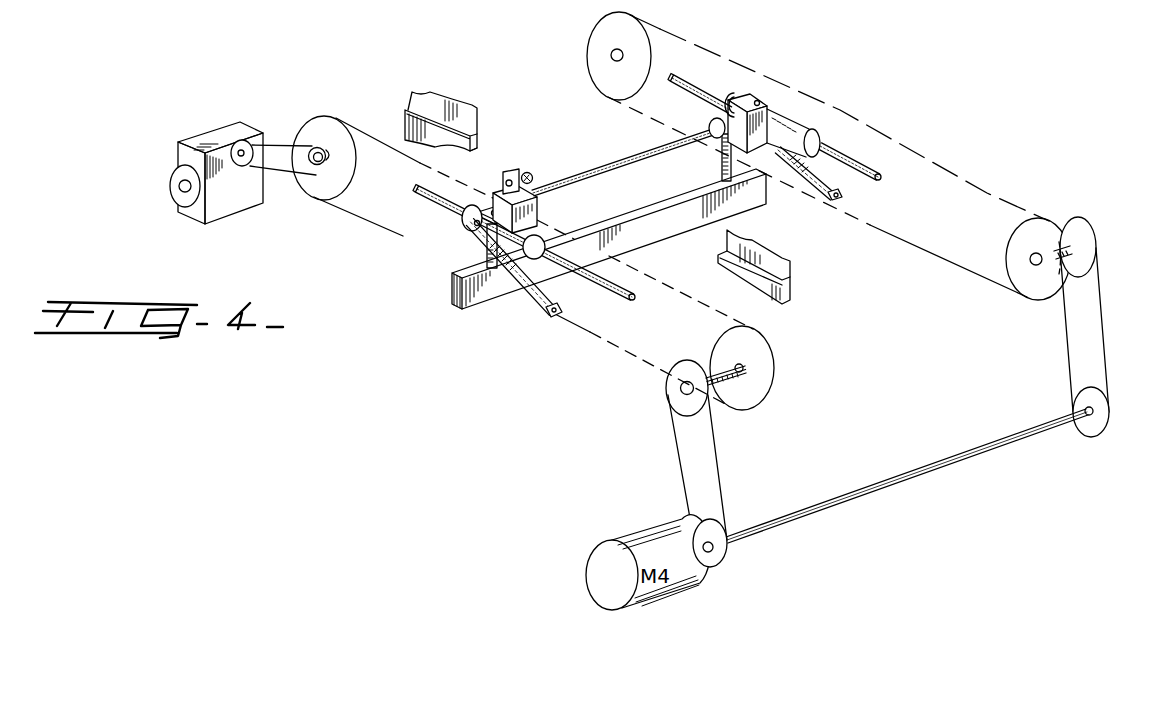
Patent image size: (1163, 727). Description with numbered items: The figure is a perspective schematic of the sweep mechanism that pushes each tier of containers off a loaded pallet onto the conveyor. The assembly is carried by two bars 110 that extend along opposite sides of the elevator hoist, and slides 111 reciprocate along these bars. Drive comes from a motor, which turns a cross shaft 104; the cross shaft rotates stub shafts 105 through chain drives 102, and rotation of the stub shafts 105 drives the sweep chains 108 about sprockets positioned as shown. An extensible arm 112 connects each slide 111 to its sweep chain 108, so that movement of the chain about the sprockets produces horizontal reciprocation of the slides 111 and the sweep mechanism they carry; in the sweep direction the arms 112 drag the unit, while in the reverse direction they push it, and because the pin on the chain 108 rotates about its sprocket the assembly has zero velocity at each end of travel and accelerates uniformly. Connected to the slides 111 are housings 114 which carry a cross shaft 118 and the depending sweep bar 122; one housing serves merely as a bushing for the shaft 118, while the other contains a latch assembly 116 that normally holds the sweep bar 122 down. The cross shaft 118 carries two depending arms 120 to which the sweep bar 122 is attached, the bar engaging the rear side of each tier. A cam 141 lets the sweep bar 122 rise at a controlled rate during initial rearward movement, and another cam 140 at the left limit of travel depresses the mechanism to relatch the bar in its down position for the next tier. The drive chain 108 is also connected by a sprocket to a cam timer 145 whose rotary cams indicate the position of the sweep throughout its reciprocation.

The chain drives 102 is at (1104, 338).
The cross shaft 104 is at (860, 497).
The stub shafts 105 is at (1076, 243).
The sweep chains 108 is at (613, 342).
The bars 110 is at (631, 298).
The slides 111 is at (468, 214).
The extensible arm 112 is at (543, 291).
The housings 114 is at (528, 162).
The latch assembly 116 is at (530, 211).
The cross shaft 118 is at (620, 160).
The depending arms 120 is at (724, 169).
The sweep bar 122 is at (665, 228).
The cam 140 is at (445, 102).
The cam 141 is at (753, 277).
The cam timer 145 is at (211, 142).